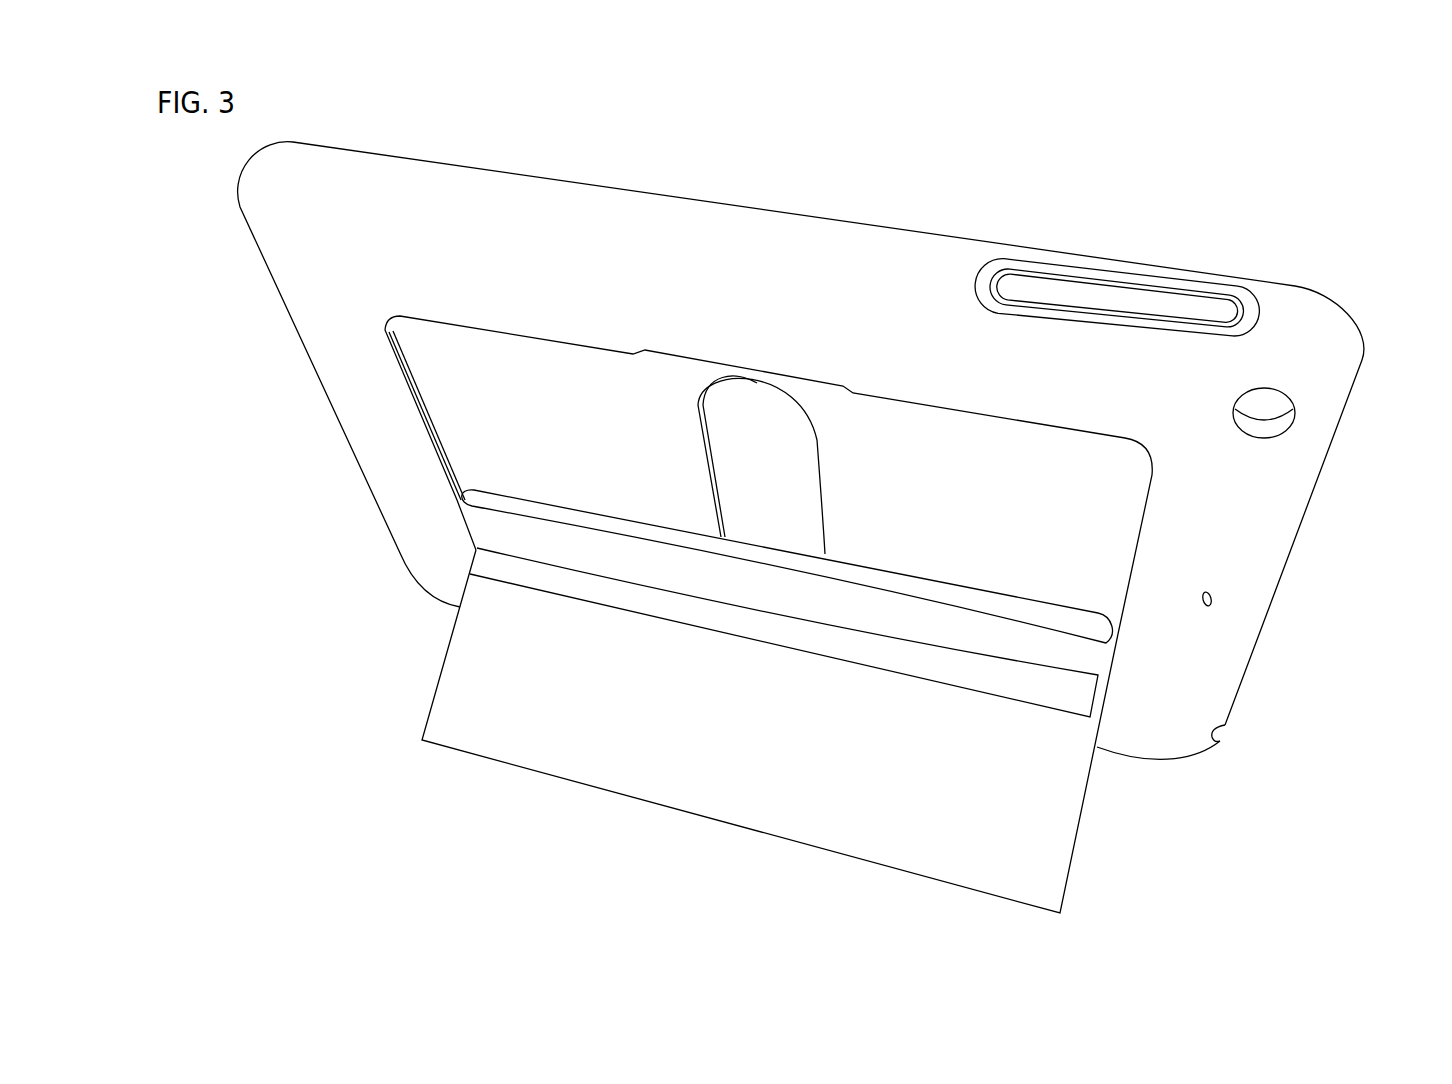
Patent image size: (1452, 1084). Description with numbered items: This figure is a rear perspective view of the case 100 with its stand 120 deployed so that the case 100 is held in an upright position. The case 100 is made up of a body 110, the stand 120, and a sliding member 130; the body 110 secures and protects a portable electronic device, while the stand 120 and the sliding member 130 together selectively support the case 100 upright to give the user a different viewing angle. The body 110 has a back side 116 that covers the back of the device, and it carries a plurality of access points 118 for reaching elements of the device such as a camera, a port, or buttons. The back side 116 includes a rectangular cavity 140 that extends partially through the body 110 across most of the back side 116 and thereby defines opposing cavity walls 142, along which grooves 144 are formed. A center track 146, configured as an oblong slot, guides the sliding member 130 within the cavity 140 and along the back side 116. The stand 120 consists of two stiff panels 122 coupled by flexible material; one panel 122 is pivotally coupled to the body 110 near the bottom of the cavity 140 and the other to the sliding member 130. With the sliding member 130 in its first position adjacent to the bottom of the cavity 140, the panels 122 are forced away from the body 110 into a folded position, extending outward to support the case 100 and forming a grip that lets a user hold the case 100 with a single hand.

The case 100 is at (1176, 165).
The body 110 is at (615, 181).
The back side 116 is at (769, 331).
The access points 118 is at (1228, 724).
The stand 120 is at (847, 737).
The panels 122 is at (943, 845).
The sliding member 130 is at (1083, 653).
The cavity 140 is at (927, 461).
The cavity walls 142 is at (382, 334).
The grooves 144 is at (392, 365).
The center track 146 is at (791, 442).